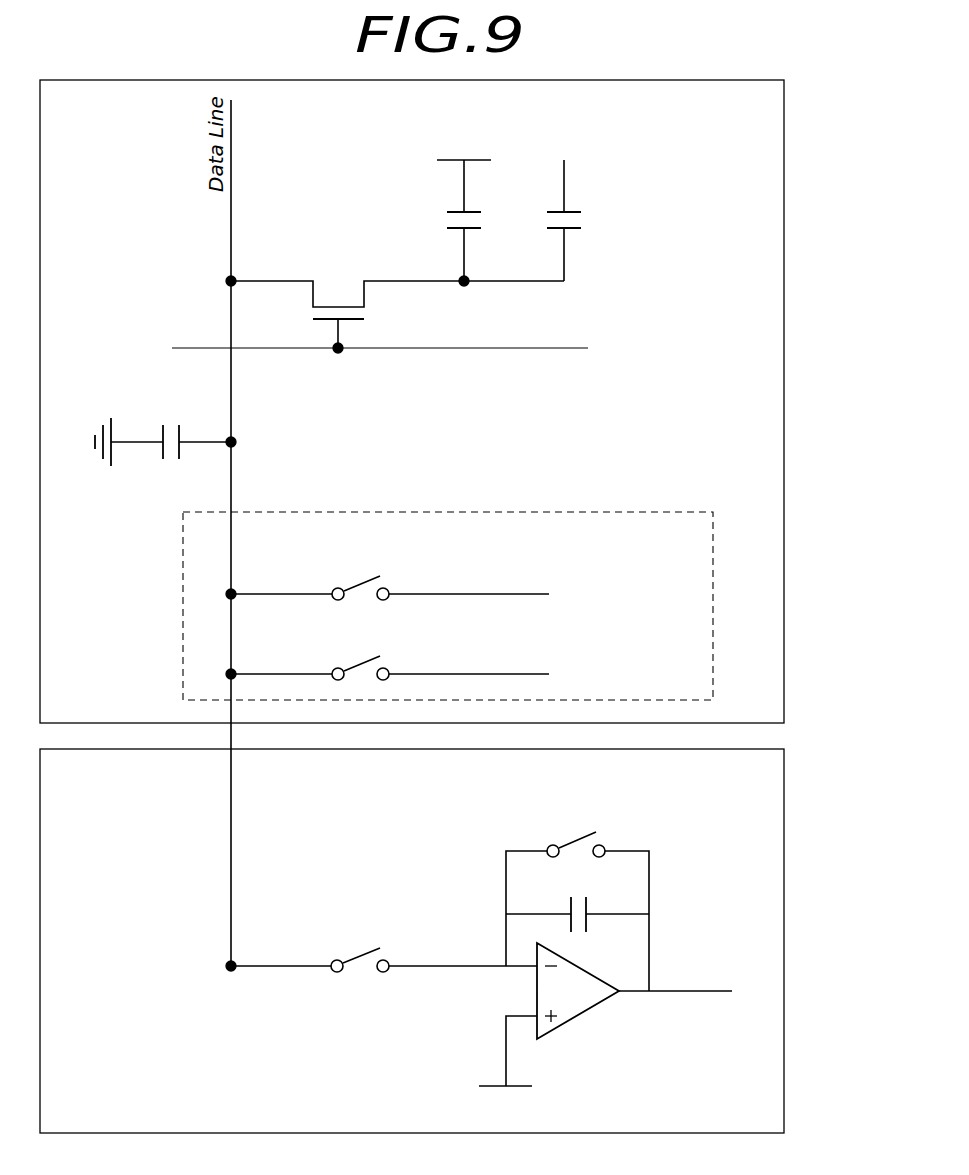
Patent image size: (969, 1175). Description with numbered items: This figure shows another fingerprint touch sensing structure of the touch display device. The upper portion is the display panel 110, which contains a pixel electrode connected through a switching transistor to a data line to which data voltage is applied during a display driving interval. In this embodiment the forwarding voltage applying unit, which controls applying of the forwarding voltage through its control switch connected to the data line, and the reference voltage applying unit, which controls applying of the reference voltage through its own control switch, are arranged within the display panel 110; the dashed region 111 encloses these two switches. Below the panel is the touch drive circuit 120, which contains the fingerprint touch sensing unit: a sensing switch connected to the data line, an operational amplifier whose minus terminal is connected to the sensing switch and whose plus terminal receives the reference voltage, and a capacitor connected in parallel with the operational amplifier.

The display panel 110 is at (784, 156).
The voltage supply switching unit 111 is at (713, 555).
The touch drive circuit 120 is at (784, 769).